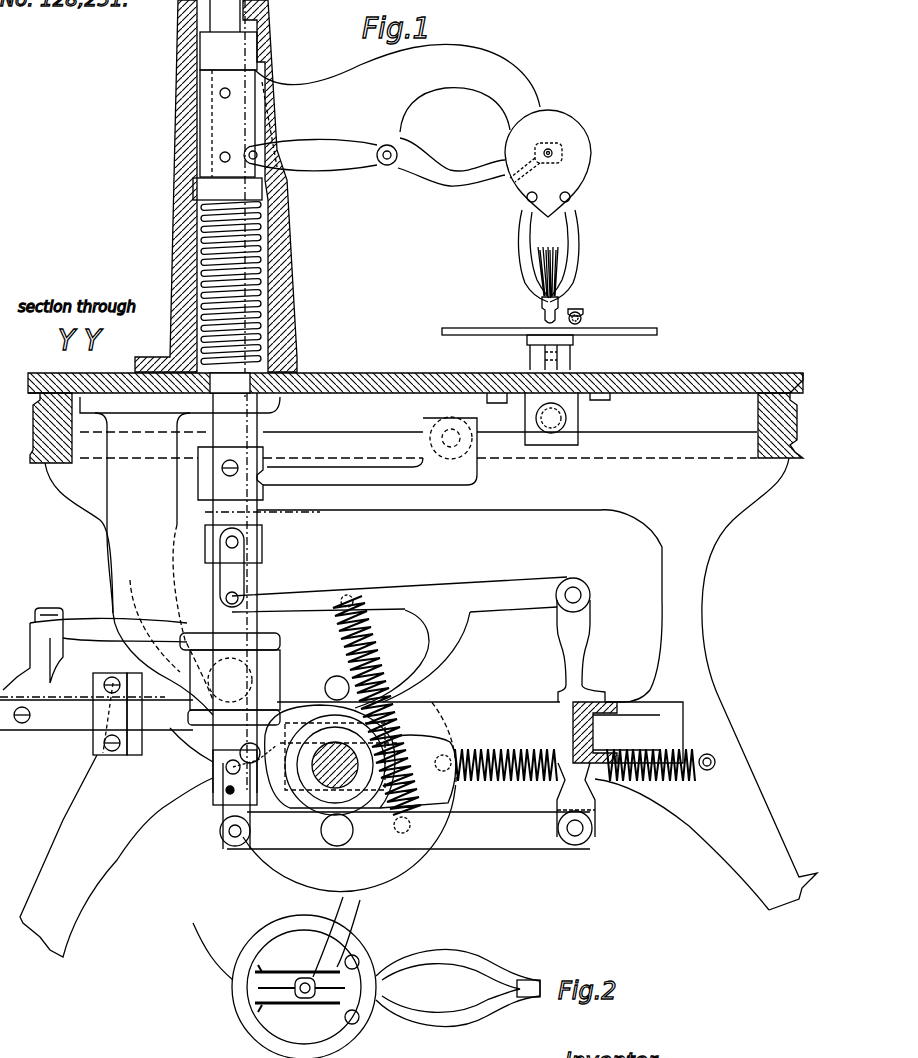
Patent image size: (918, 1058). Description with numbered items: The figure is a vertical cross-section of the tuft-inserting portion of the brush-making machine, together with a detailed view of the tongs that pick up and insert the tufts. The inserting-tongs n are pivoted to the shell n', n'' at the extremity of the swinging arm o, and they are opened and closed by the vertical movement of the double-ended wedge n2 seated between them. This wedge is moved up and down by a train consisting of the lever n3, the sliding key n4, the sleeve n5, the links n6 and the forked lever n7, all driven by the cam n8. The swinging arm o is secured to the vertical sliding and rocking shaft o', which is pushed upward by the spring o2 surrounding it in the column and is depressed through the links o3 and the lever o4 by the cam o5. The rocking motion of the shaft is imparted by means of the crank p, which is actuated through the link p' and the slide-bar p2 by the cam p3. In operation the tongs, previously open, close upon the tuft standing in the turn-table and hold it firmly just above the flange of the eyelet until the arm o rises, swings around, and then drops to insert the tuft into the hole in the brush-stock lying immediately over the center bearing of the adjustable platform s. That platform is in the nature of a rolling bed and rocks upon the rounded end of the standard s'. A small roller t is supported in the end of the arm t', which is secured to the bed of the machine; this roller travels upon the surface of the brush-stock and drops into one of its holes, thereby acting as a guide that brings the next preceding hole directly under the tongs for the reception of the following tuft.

In FIG. 1, the swinging arm o is at (397, 104).
In FIG. 1, the vertical sliding and rocking shaft o' is at (227, 412).
In FIG. 1, the spring o2 is at (231, 282).
In FIG. 1, the links o3 is at (303, 775).
In FIG. 1, the lever o4 is at (405, 806).
In FIG. 1, the cam o5 is at (335, 780).
In FIG. 1, the inserting-tongs n is at (547, 266).
In FIG. 2, the inserting-tongs n is at (397, 992).
In FIG. 2, the shell n' is at (284, 986).
In FIG. 1, the shell n'' is at (548, 163).
In FIG. 1, the double-ended wedge n2 is at (451, 162).
In FIG. 2, the double-ended wedge n2 is at (301, 988).
In FIG. 1, the lever n3 is at (310, 157).
In FIG. 2, the lever n3 is at (336, 937).
In FIG. 1, the sliding key n4 is at (259, 464).
In FIG. 1, the sleeve n5 is at (233, 544).
In FIG. 1, the links n6 is at (232, 567).
In FIG. 1, the forked lever n7 is at (399, 705).
In FIG. 1, the cam n8 is at (330, 756).
In FIG. 1, the crank p is at (230, 679).
In FIG. 1, the link p' is at (95, 649).
In FIG. 1, the slide-bar p2 is at (278, 740).
In FIG. 1, the cam p3 is at (348, 795).
In FIG. 1, the adjustable platform s is at (549, 323).
In FIG. 1, the standard s' is at (557, 352).
In FIG. 1, the small roller t is at (579, 320).
In FIG. 1, the arm t' is at (575, 304).